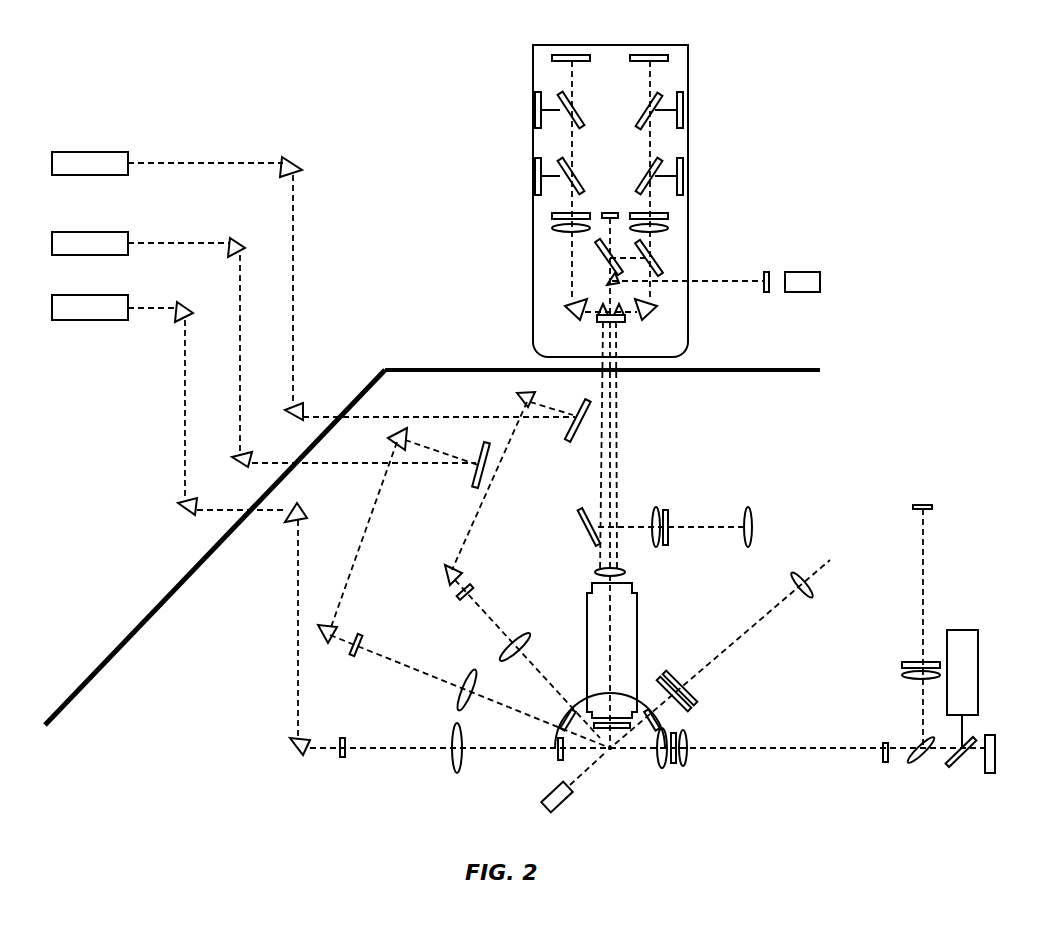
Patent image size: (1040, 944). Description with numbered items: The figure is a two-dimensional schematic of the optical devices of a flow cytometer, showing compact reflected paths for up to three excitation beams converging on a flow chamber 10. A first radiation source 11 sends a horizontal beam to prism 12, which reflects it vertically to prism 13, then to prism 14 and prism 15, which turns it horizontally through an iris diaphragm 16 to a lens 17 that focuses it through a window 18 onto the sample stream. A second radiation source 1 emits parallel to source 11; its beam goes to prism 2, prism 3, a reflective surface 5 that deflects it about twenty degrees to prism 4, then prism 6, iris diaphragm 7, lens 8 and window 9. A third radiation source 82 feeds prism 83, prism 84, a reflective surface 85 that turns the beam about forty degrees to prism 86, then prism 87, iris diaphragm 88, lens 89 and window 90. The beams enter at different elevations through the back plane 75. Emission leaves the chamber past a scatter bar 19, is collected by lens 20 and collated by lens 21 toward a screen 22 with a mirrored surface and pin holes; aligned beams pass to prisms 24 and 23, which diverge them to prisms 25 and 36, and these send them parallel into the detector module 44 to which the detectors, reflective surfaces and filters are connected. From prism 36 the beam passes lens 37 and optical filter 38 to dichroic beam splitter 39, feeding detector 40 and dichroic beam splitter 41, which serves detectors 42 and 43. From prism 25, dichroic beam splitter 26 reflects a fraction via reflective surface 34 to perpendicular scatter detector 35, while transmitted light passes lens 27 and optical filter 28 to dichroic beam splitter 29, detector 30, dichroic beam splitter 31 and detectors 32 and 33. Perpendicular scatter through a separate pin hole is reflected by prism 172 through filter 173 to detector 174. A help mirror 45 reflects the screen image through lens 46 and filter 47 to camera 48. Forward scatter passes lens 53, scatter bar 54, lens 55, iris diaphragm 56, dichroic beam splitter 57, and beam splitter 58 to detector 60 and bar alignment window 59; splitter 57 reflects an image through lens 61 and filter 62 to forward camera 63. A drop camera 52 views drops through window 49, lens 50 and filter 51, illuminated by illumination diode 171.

The second radiation source 1 is at (92, 232).
The prism 2 is at (240, 238).
The prism 3 is at (250, 452).
The prism 4 is at (408, 435).
The reflective surface 5 is at (474, 485).
The prism 6 is at (338, 628).
The iris diaphragm 7 is at (362, 640).
The lens 8 is at (460, 705).
The window 9 is at (563, 717).
The flow chamber 10 is at (611, 753).
The first radiation source 11 is at (88, 295).
The prism 12 is at (186, 302).
The prism 13 is at (195, 500).
The prism 14 is at (298, 505).
The prism 15 is at (305, 738).
The iris diaphragm 16 is at (341, 757).
The lens 17 is at (455, 772).
The window 18 is at (560, 760).
The scatter bar 19 is at (614, 750).
The lens 20 is at (637, 630).
The lens 21 is at (627, 572).
The screen 22 is at (620, 322).
The prism 23 is at (625, 320).
The prism 24 is at (600, 318).
The prism 25 is at (657, 305).
The dichroic beam splitter 26 is at (655, 258).
The lens 27 is at (668, 229).
The optical filter 28 is at (668, 215).
The dichroic beam splitter 29 is at (655, 170).
The detector 30 is at (683, 172).
The dichroic beam splitter 31 is at (655, 105).
The detector 32 is at (683, 108).
The detector 33 is at (660, 55).
The reflective surface 34 is at (605, 258).
The perpendicular scatter detector 35 is at (605, 212).
The prism 36 is at (565, 305).
The lens 37 is at (553, 229).
The optical filter 38 is at (553, 215).
The dichroic beam splitter 39 is at (570, 172).
The detector 40 is at (535, 172).
The dichroic beam splitter 41 is at (570, 108).
The detector 42 is at (535, 105).
The detector 43 is at (562, 55).
The housing 44 is at (616, 45).
The help mirror 45 is at (582, 537).
The lens 46 is at (657, 547).
The filter 47 is at (668, 510).
The camera 48 is at (750, 507).
The window 49 is at (658, 720).
The lens 50 is at (690, 700).
The filter 51 is at (685, 675).
The drop camera 52 is at (810, 580).
The lens 53 is at (665, 768).
The scatter bar 54 is at (676, 763).
The lens 55 is at (686, 743).
The iris diaphragm 56 is at (883, 762).
The dichroic beam splitter 57 is at (918, 745).
The beam splitter 58 is at (950, 765).
The bar alignment window 59 is at (988, 773).
The detector 60 is at (965, 630).
The lens 61 is at (904, 672).
The filter 62 is at (920, 660).
The forward camera 63 is at (915, 505).
The back plane 75 is at (128, 642).
The third radiation source 82 is at (92, 152).
The prism 83 is at (292, 157).
The prism 84 is at (300, 403).
The reflective surface 85 is at (572, 438).
The prism 86 is at (536, 393).
The prism 87 is at (462, 572).
The iris diaphragm 88 is at (460, 592).
The lens 89 is at (525, 640).
The window 90 is at (586, 700).
The illumination diode 171 is at (566, 808).
The prism 172 is at (610, 283).
The filter 173 is at (770, 272).
The perpendicular scatter detector 174 is at (815, 272).